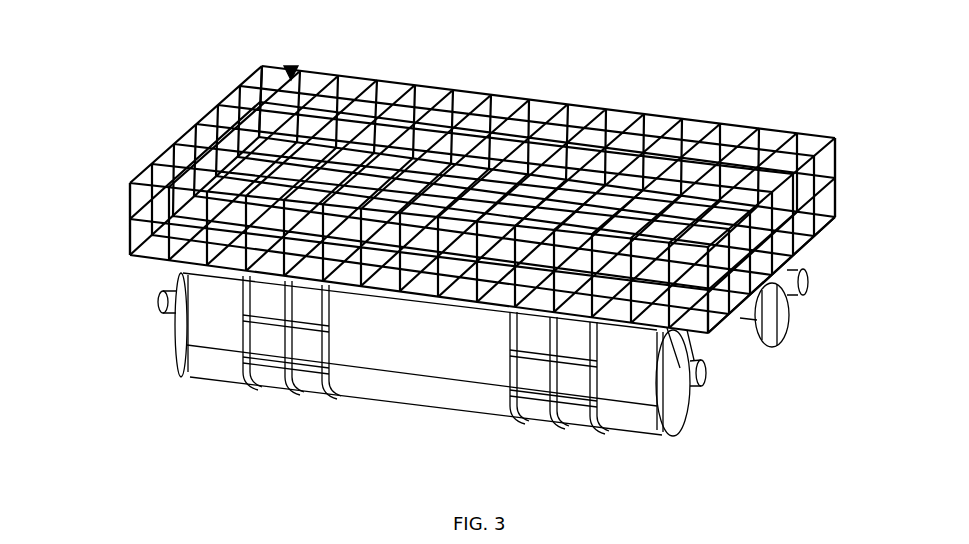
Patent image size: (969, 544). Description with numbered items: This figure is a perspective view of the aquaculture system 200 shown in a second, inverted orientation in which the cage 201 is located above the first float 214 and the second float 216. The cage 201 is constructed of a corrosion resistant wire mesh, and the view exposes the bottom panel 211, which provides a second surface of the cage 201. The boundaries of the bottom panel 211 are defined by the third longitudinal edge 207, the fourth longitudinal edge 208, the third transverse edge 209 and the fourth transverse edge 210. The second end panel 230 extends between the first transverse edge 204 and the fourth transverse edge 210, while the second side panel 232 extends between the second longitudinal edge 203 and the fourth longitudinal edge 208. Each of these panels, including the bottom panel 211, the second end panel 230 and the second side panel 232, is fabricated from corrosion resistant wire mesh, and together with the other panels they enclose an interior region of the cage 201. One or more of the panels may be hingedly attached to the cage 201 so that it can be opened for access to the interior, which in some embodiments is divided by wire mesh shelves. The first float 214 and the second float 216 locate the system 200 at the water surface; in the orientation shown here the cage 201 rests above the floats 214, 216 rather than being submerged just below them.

The aquaculture system 200 is at (724, 101).
The cage 201 is at (558, 91).
The second longitudinal edge 203 is at (151, 276).
The first transverse edge 204 is at (812, 243).
The third longitudinal edge 207 is at (457, 90).
The fourth longitudinal edge 208 is at (130, 186).
The third transverse edge 209 is at (185, 135).
The fourth transverse edge 210 is at (813, 160).
The bottom panel 211 is at (288, 68).
The first float 214 is at (708, 338).
The second float 216 is at (680, 426).
The second end panel 230 is at (800, 211).
The second side panel 232 is at (132, 258).